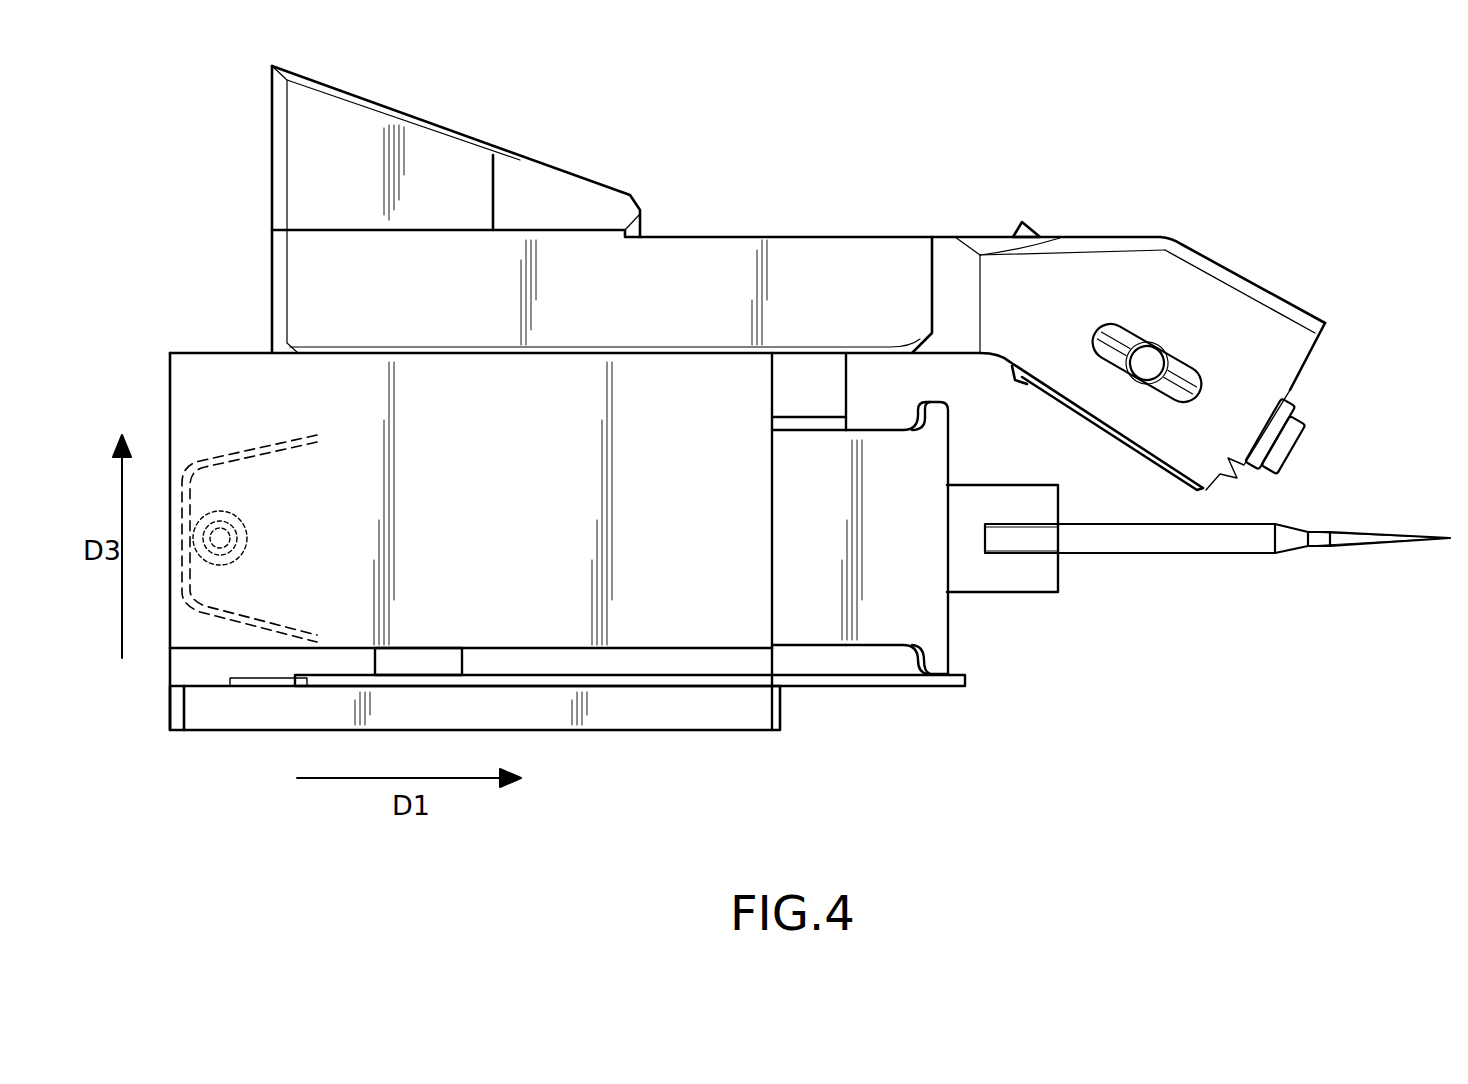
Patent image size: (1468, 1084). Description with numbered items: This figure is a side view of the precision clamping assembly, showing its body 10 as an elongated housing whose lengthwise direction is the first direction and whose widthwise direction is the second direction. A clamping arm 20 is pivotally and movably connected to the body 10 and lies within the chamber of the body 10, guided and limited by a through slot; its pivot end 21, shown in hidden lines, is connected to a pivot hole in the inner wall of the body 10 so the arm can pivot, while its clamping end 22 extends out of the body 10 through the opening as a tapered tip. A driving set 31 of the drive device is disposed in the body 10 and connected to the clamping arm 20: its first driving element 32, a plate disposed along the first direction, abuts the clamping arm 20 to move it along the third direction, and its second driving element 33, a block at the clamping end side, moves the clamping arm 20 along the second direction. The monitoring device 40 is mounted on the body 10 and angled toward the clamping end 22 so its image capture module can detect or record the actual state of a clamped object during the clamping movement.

The body 10 is at (219, 348).
The clamping arm 20 is at (877, 638).
The pivot end 21 is at (280, 470).
The clamping end 22 is at (1370, 538).
The driving set 31 is at (999, 684).
The first driving element 32 is at (903, 682).
The second driving element 33 is at (1030, 577).
The monitoring device 40 is at (797, 222).